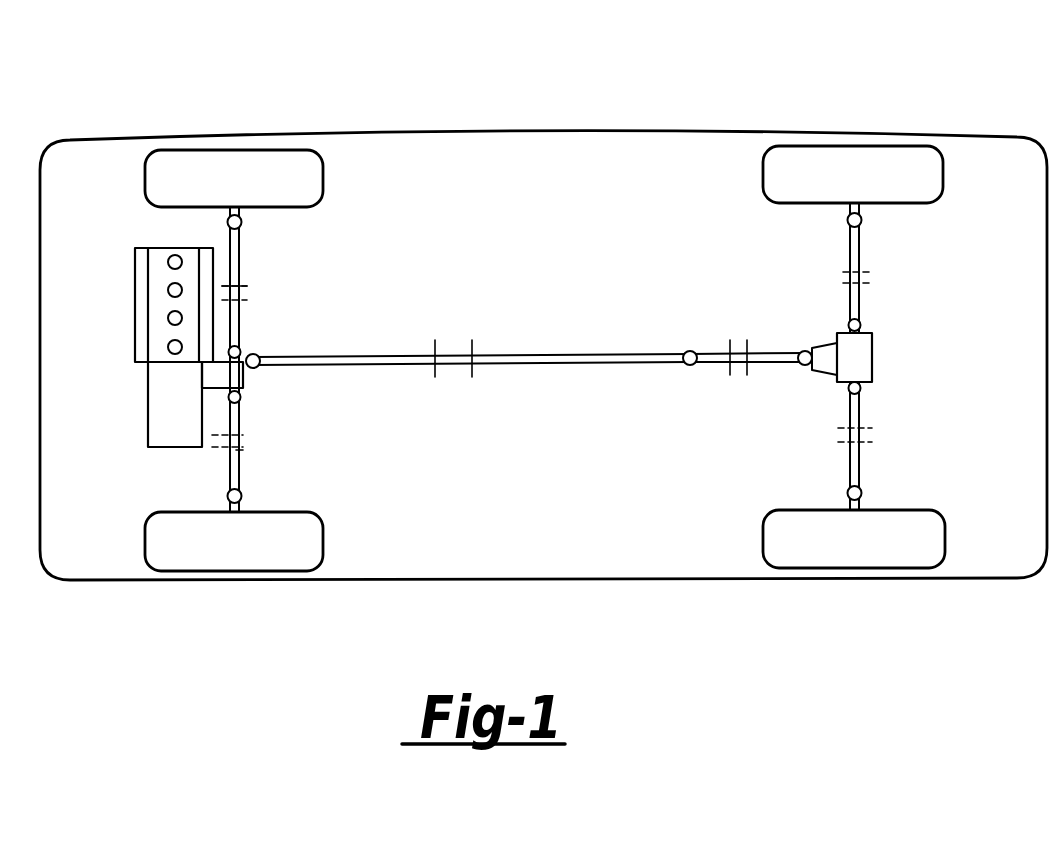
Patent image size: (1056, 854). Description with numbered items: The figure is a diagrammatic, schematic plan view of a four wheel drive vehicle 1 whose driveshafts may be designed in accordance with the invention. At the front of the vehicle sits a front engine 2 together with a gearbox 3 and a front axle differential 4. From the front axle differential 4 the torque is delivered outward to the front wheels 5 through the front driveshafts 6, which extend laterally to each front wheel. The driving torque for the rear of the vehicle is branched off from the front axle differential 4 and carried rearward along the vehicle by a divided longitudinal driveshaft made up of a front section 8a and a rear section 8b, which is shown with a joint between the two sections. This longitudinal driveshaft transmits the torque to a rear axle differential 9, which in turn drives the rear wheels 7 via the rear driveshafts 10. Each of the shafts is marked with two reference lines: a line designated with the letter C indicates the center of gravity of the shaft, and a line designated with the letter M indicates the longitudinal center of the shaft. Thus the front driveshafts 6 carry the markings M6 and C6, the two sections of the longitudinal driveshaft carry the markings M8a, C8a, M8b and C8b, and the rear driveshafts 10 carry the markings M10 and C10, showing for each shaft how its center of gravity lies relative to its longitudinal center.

The four wheel drive vehicle 1 is at (617, 190).
The front engine 2 is at (155, 260).
The gearbox 3 is at (175, 423).
The front axle differential 4 is at (218, 377).
The front wheels 5 is at (228, 173).
The front driveshafts 6 is at (233, 270).
The rear wheels 7 is at (866, 170).
The longitudinal driveshaft 8a is at (527, 355).
The longitudinal driveshaft 8b is at (760, 352).
The rear axle differential 9 is at (858, 362).
The rear driveshafts 10 is at (855, 262).
The longitudinal center line of front driveshaft M6 is at (240, 286).
The center of gravity line of front driveshaft C6 is at (240, 302).
The longitudinal center line of longitudinal driveshaft section M8a is at (477, 344).
The center of gravity line of longitudinal driveshaft section C8a is at (435, 373).
The longitudinal center line of longitudinal driveshaft section M8b is at (744, 350).
The center of gravity line of longitudinal driveshaft section C8b is at (730, 368).
The longitudinal center line of rear driveshaft M10 is at (843, 443).
The center of gravity line of rear driveshaft C10 is at (842, 428).